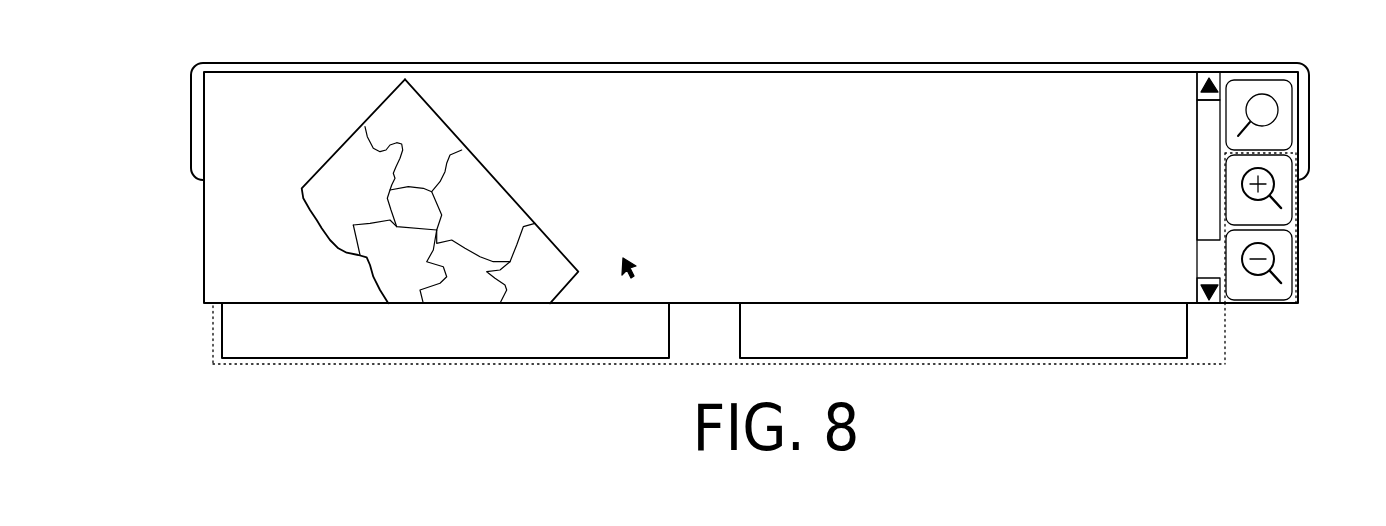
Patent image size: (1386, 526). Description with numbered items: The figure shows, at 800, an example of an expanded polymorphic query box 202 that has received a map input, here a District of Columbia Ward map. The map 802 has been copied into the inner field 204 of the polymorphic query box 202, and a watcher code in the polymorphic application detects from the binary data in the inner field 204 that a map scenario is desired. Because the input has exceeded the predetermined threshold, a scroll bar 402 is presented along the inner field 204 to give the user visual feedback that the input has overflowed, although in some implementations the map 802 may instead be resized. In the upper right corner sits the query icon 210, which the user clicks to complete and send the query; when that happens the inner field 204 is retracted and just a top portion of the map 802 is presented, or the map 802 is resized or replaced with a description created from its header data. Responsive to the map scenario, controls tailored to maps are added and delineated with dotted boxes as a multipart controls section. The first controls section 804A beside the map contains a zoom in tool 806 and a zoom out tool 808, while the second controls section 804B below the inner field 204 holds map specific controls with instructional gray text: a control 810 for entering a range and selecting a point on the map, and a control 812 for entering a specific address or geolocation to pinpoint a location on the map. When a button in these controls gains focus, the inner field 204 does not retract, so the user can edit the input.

The expanded polymorphic query box with map input 800 is at (749, 203).
The polymorphic query box 202 is at (1064, 62).
The inner field 204 is at (205, 113).
The query icon 210 is at (1257, 80).
The zoom in tool 806 is at (1299, 185).
The zoom out tool 808 is at (1299, 255).
The scroll bar 402 is at (1197, 222).
The map 802 is at (636, 268).
The controls section 804A is at (1293, 249).
The controls section 804B is at (756, 355).
The range control 810 is at (323, 361).
The address control 812 is at (990, 364).